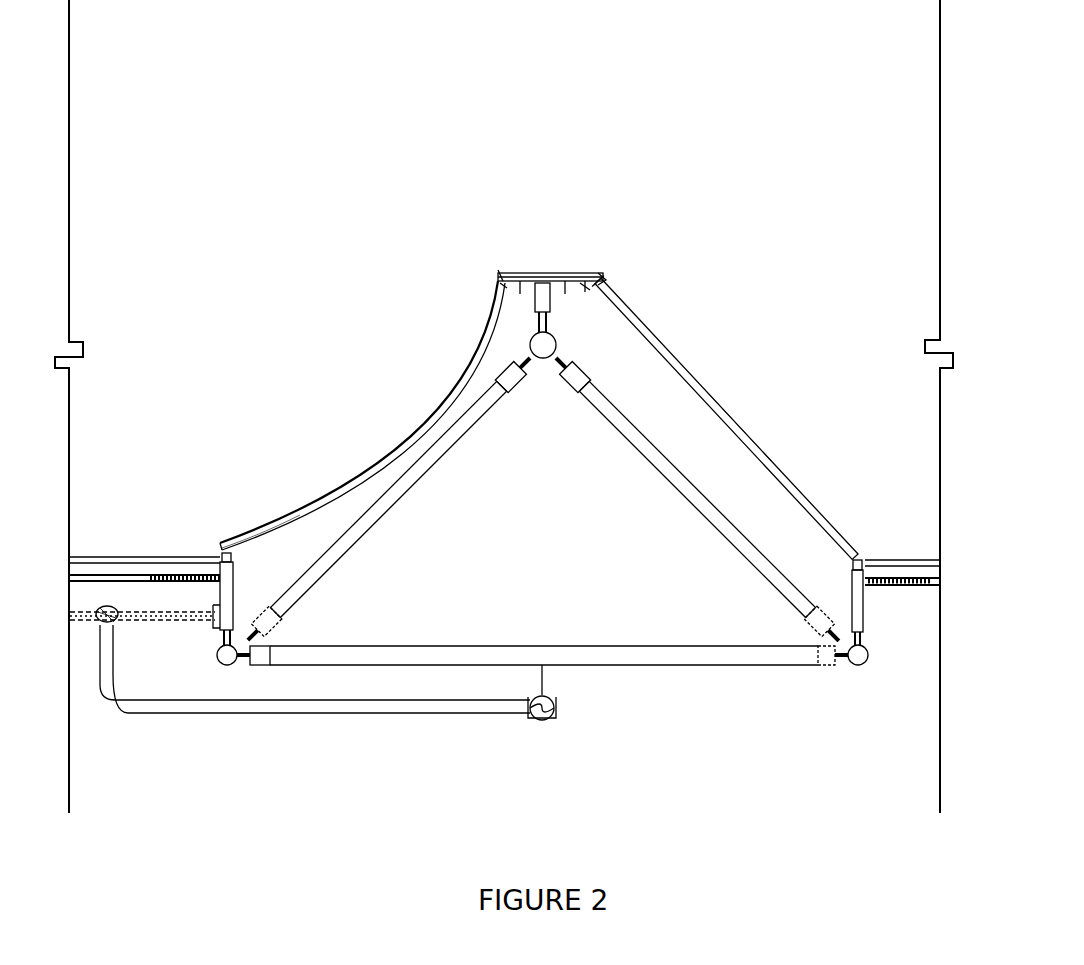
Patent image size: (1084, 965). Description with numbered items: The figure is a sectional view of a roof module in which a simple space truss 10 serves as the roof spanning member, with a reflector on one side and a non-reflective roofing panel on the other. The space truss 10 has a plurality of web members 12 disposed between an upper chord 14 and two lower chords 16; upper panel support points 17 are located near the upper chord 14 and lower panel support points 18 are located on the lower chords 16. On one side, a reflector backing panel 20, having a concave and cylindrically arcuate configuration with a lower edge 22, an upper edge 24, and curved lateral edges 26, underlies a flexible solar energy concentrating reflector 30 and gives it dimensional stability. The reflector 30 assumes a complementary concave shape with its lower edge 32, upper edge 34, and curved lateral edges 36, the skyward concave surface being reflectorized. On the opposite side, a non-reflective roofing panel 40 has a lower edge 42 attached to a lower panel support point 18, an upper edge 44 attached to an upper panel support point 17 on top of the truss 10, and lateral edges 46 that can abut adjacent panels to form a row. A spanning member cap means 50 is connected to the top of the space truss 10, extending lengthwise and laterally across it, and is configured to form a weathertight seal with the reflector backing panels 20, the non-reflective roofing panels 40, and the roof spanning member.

The simple space truss 10 is at (542, 624).
The web members 12 is at (333, 576).
The upper chord 14 is at (542, 350).
The lower chords 16 is at (227, 668).
The upper panel support points 17 is at (586, 286).
The lower panel support points 18 is at (848, 578).
The reflector backing panel 20 is at (470, 364).
The lower edge 22 is at (218, 548).
The upper edge 24 is at (508, 273).
The curved lateral edges 26 is at (433, 430).
The solar energy concentrating reflector 30 is at (400, 443).
The lower edge 32 is at (218, 546).
The upper edge 34 is at (503, 272).
The curved lateral edges 36 is at (327, 491).
The non-reflective roofing panel 40 is at (785, 462).
The lower edge 42 is at (855, 540).
The upper edge 44 is at (606, 282).
The lateral edges 46 is at (718, 410).
The spanning member cap means 50 is at (545, 270).